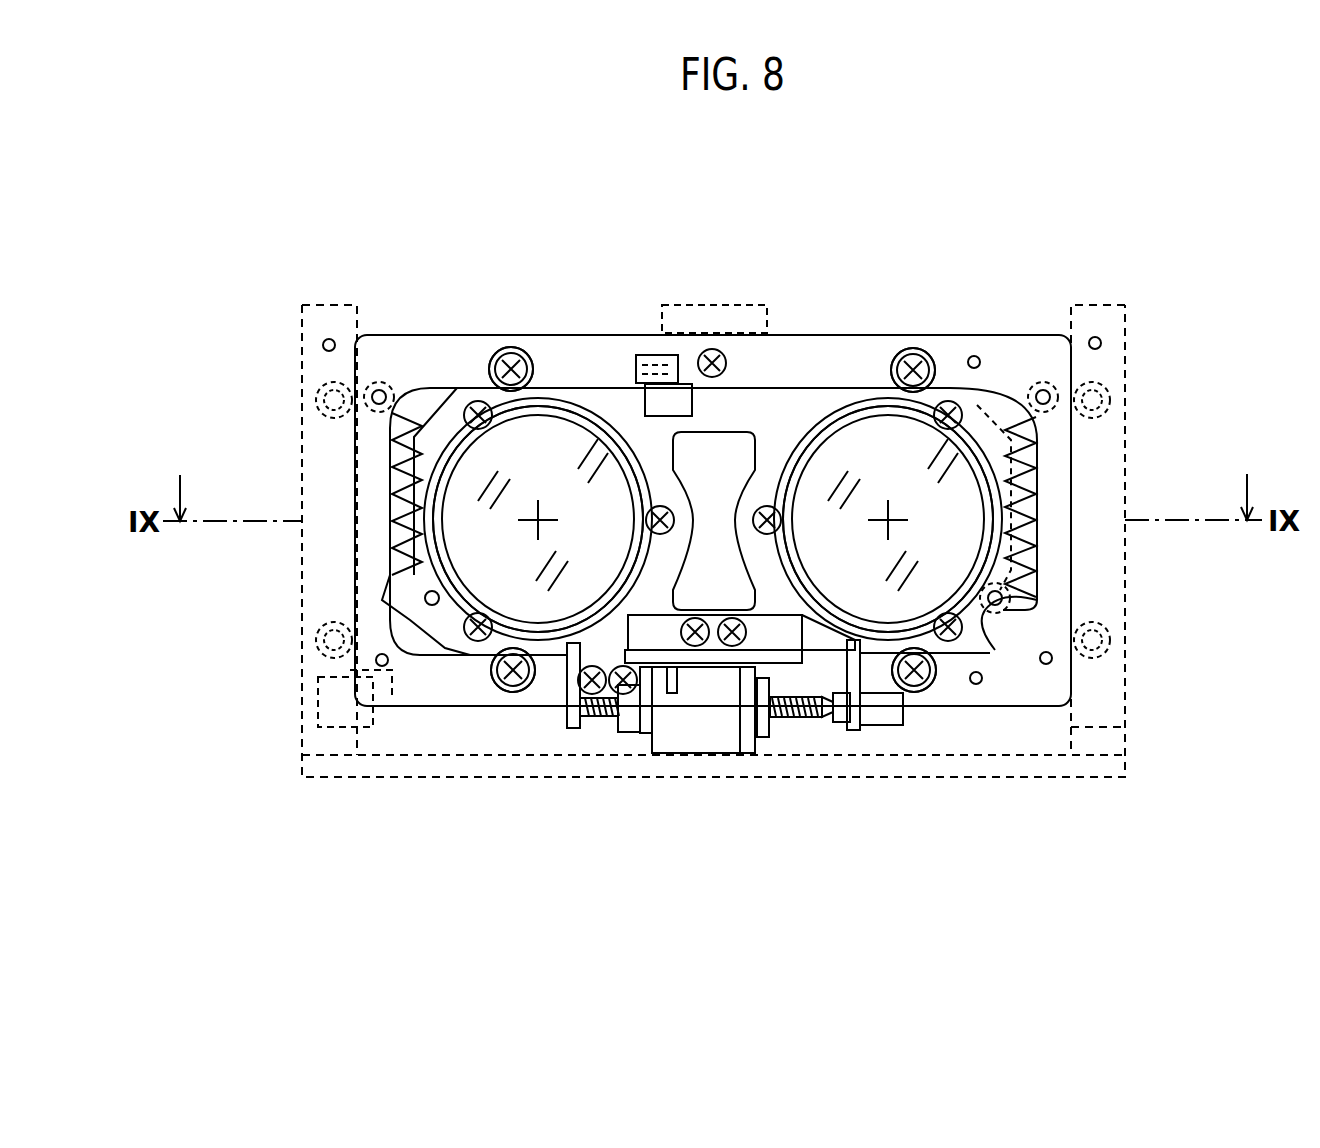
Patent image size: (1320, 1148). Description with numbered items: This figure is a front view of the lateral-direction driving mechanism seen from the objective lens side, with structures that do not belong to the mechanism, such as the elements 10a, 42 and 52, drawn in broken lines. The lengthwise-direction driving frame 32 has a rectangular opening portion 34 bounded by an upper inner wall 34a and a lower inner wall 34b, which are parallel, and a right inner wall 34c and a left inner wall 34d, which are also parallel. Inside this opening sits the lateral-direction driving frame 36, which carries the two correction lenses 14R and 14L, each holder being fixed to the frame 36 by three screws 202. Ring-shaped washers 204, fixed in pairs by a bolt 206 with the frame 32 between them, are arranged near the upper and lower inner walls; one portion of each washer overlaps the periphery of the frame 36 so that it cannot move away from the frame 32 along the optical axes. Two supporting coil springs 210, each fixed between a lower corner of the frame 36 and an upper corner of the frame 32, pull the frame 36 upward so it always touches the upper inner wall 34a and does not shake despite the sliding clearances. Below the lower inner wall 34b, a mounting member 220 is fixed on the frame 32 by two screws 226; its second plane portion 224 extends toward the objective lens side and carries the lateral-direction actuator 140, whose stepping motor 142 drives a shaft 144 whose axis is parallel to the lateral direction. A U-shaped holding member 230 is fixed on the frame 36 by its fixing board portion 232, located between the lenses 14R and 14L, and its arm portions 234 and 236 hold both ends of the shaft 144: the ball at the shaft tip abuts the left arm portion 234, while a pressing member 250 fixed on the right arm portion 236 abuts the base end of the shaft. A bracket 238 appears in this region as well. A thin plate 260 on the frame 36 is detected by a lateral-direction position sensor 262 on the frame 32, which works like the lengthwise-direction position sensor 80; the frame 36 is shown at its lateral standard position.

The housing bottom portion 10a is at (1127, 768).
The right side member 42 is at (328, 300).
The left side member 52 is at (1097, 300).
The lengthwise-direction driving frame 32 is at (840, 330).
The opening portion 34 is at (1040, 630).
The upper inner wall 34a is at (805, 400).
The lower inner wall 34b is at (476, 650).
The right inner wall 34c is at (1022, 630).
The left inner wall 34d is at (405, 610).
The lateral-direction driving frame 36 is at (590, 385).
The correction lens 14R is at (547, 442).
The correction lens 14L is at (853, 443).
The lengthwise-direction position sensor 80 is at (752, 305).
The lateral-direction actuator 140 is at (813, 800).
The stepping motor 142 is at (700, 770).
The shaft 144 is at (590, 718).
The screws 202 is at (476, 402).
The washers 204 is at (510, 347).
The bolt 206 is at (497, 352).
The supporting coil springs 210 is at (428, 517).
The mounting member 220 is at (548, 691).
The second plane portion 224 is at (618, 718).
The screws 226 is at (615, 652).
The holding member 230 is at (985, 483).
The fixing board portion 232 is at (650, 565).
The arm portion 234 is at (582, 728).
The arm portion 236 is at (853, 730).
The bracket 238 is at (720, 640).
The pressing member 250 is at (880, 727).
The thin plate 260 is at (640, 353).
The lateral-direction position sensor 262 is at (660, 384).